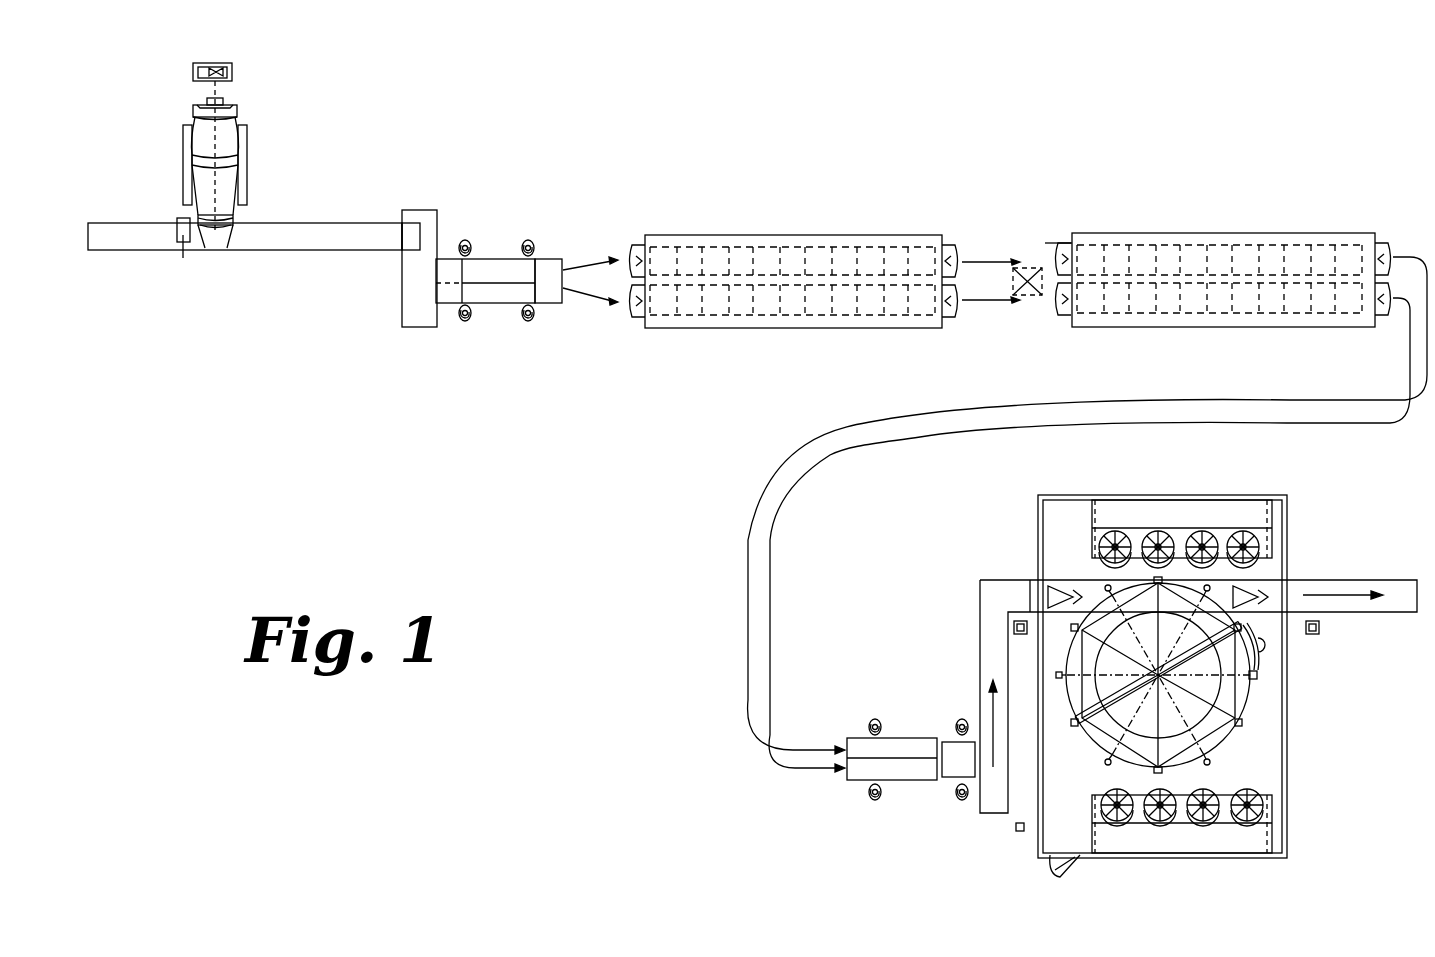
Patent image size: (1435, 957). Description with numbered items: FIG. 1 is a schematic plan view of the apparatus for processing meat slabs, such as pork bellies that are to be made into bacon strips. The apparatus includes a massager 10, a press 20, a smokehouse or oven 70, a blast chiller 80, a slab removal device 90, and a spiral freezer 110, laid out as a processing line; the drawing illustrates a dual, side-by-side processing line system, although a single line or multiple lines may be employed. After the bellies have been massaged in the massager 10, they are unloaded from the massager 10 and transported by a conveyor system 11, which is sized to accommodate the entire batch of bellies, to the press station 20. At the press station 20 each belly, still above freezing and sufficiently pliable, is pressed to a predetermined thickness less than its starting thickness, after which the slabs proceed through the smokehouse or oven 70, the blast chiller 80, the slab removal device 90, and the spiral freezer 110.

The massager 10 is at (237, 112).
The conveyor system 11 is at (380, 194).
The press 20 is at (490, 258).
The smokehouse or oven 70 is at (813, 235).
The blast chiller 80 is at (1223, 233).
The slab removal device 90 is at (910, 737).
The spiral freezer 110 is at (1288, 533).